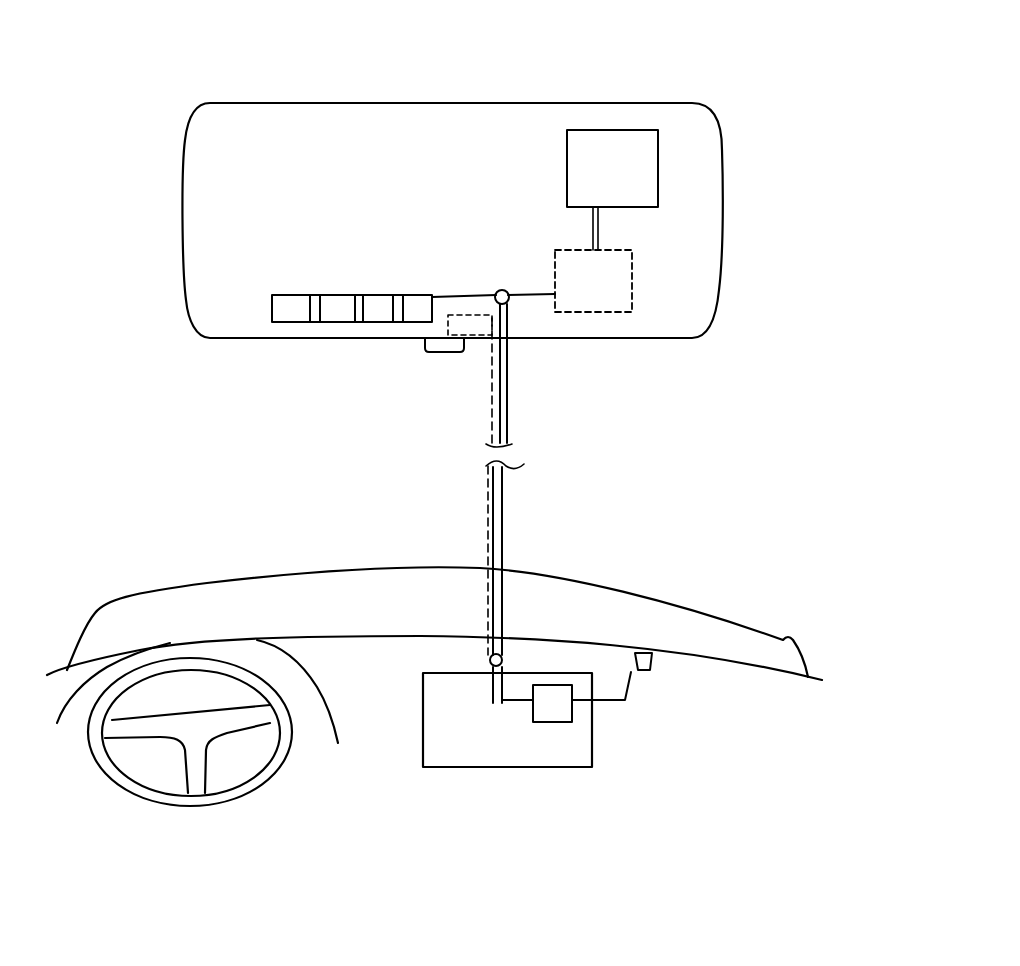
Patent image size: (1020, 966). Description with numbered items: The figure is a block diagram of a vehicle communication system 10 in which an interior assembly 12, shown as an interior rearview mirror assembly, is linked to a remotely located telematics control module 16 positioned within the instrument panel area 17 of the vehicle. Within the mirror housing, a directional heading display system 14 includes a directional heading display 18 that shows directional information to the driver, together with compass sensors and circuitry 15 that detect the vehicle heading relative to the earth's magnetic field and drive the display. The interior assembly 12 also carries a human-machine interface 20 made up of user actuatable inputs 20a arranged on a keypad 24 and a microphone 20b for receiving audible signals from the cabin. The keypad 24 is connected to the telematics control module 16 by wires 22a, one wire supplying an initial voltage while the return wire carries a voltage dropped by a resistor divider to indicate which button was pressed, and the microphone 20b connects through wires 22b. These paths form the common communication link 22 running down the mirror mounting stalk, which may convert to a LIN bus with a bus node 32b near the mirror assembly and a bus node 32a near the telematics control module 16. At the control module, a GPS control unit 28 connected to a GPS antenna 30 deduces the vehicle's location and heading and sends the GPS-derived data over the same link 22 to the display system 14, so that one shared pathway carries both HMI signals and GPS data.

The communication system 10 is at (763, 324).
The interior assembly 12 is at (467, 94).
The directional heading display system 14 is at (670, 238).
The compass sensors and circuitry 15 is at (628, 314).
The telematics control module 16 is at (420, 762).
The instrument panel area 17 is at (560, 602).
The directional heading display 18 is at (622, 145).
The human-machine interface 20 is at (328, 379).
The user actuatable inputs 20a is at (292, 307).
The microphone 20b is at (440, 353).
The communication link 22 is at (533, 416).
The wires or link 22a is at (505, 535).
The communication link 22b is at (486, 483).
The keypad 24 is at (358, 312).
The GPS control unit 28 is at (558, 722).
The GPS antenna 30 is at (648, 662).
The LIN bus node 32a is at (500, 657).
The LIN bus node 32b is at (508, 301).